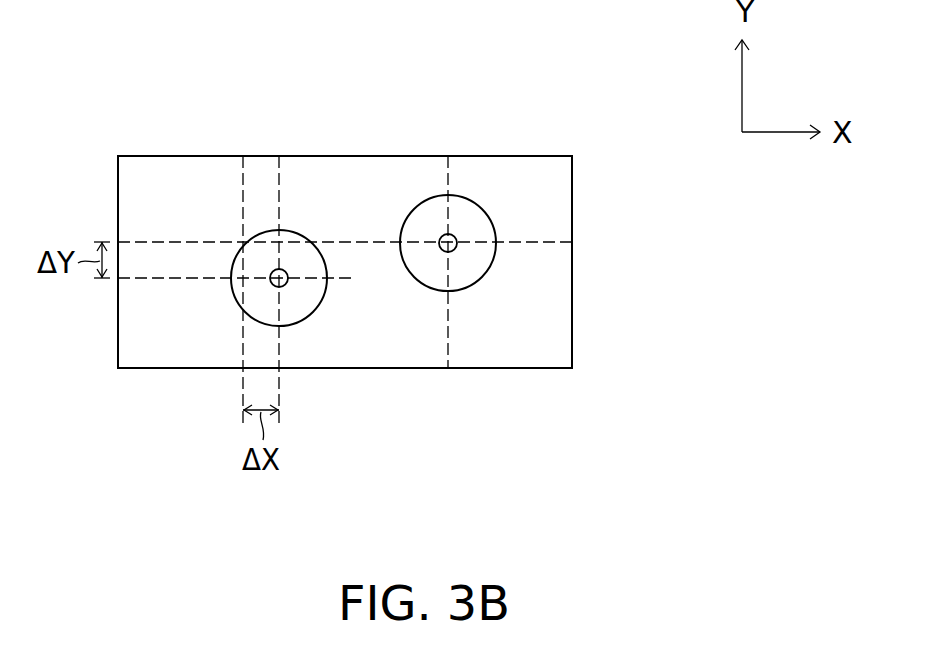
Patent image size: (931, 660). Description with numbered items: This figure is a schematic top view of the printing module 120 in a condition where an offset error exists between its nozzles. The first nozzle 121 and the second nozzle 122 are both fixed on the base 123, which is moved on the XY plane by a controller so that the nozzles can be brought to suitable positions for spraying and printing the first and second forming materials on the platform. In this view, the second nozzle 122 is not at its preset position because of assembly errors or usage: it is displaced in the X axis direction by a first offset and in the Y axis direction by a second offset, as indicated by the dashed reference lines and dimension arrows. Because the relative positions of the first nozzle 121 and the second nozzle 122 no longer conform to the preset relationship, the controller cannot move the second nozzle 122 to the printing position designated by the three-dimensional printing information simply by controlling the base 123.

The printing module 120 is at (812, 387).
The first nozzle 121 is at (495, 223).
The second nozzle 122 is at (298, 232).
The base 123 is at (540, 156).